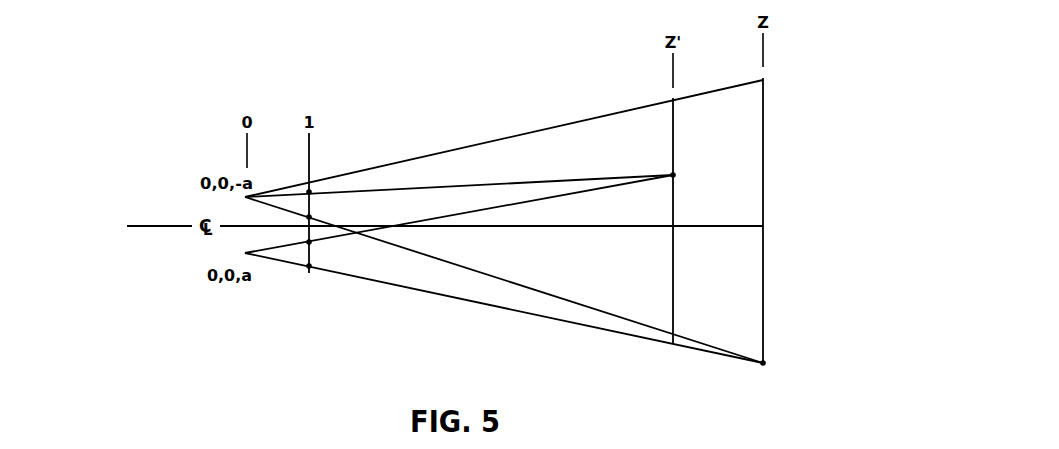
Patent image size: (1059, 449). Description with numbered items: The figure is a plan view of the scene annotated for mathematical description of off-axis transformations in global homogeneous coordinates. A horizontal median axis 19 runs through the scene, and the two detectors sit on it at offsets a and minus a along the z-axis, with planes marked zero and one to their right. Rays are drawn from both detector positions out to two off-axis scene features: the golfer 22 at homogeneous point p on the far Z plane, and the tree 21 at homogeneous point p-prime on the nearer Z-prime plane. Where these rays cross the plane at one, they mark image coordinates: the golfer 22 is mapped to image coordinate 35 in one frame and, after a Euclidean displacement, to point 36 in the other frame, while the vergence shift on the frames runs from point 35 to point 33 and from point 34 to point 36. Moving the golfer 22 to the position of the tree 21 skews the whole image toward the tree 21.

The median axis 19 is at (143, 224).
The tree 21 is at (670, 175).
The golfer 22 is at (768, 362).
The image coordinate point 33 is at (311, 191).
The image coordinate point 34 is at (311, 243).
The image coordinate point 35 is at (311, 217).
The image coordinate point 36 is at (309, 272).